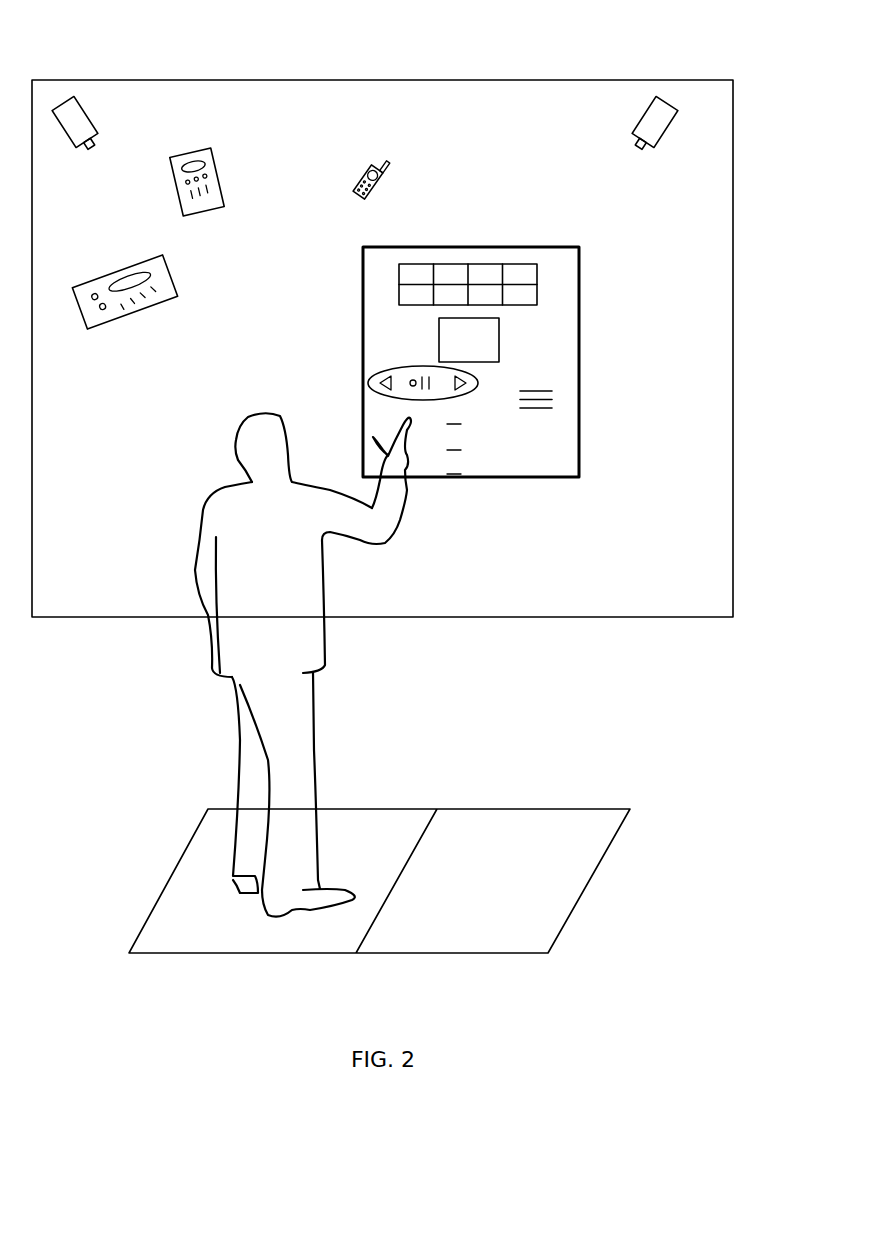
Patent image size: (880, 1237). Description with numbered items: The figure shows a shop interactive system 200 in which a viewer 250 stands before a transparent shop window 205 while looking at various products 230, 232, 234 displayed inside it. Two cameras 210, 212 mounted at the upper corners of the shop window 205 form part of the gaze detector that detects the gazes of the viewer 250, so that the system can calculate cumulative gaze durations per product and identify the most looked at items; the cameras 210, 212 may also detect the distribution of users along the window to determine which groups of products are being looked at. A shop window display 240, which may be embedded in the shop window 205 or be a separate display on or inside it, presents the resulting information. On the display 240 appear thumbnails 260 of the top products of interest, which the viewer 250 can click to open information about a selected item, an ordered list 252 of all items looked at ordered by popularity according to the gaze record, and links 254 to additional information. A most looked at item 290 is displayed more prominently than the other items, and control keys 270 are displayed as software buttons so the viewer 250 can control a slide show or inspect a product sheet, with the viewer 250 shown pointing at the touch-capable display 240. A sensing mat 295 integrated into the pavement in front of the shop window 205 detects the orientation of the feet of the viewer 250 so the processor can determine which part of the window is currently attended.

The shop interactive system 200 is at (647, 643).
The shop window 205 is at (410, 604).
The camera 210 is at (72, 95).
The camera 212 is at (656, 96).
The product 230 is at (115, 270).
The product 232 is at (215, 162).
The product 234 is at (358, 168).
The shop window display 240 is at (567, 285).
The viewer 250 is at (303, 664).
The ordered list 252 is at (467, 470).
The links 254 is at (548, 410).
The thumbnails 260 is at (490, 270).
The control keys 270 is at (368, 383).
The most looked at item 290 is at (499, 350).
The sensing mat 295 is at (235, 942).